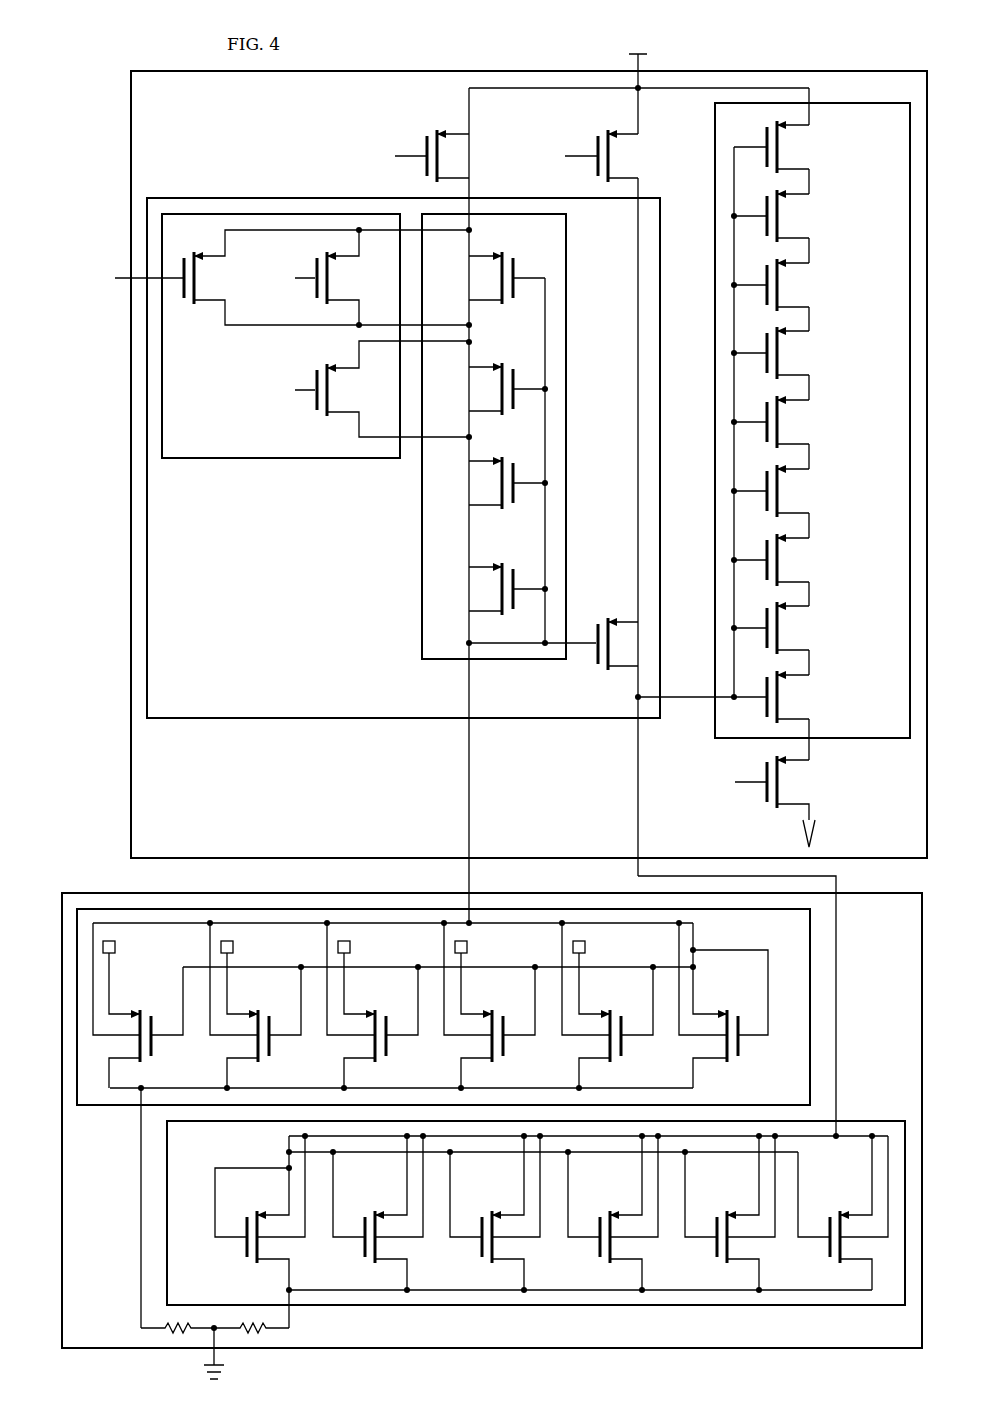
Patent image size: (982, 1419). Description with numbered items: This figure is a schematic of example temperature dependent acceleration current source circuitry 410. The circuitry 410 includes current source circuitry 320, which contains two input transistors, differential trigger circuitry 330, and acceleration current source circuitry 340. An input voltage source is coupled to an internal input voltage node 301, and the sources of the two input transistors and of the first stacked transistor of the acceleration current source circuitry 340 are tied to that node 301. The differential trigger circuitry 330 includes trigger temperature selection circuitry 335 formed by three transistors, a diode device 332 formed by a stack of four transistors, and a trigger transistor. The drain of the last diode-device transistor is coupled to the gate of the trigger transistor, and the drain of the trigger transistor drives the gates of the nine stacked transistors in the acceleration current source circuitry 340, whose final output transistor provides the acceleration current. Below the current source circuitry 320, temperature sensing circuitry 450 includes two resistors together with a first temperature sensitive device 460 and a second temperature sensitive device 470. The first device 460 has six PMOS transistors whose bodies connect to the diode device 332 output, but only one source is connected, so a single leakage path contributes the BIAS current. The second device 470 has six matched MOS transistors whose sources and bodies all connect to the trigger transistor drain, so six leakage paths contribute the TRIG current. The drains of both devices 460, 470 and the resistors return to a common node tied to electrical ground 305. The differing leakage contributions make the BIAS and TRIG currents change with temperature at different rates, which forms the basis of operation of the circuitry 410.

The temperature dependent acceleration current source circuitry 410 is at (96, 66).
The current source circuitry 320 is at (204, 118).
The differential trigger circuitry 330 is at (270, 193).
The trigger temperature selection circuitry 335 is at (256, 465).
The diode device 332 is at (416, 539).
The acceleration current source circuitry 340 is at (891, 677).
The input voltage node 301 is at (644, 93).
The temperature sensing circuitry 450 is at (96, 887).
The first temperature sensitive device 460 is at (113, 1111).
The second temperature sensitive device 470 is at (864, 1113).
The electrical ground 305 is at (207, 1366).